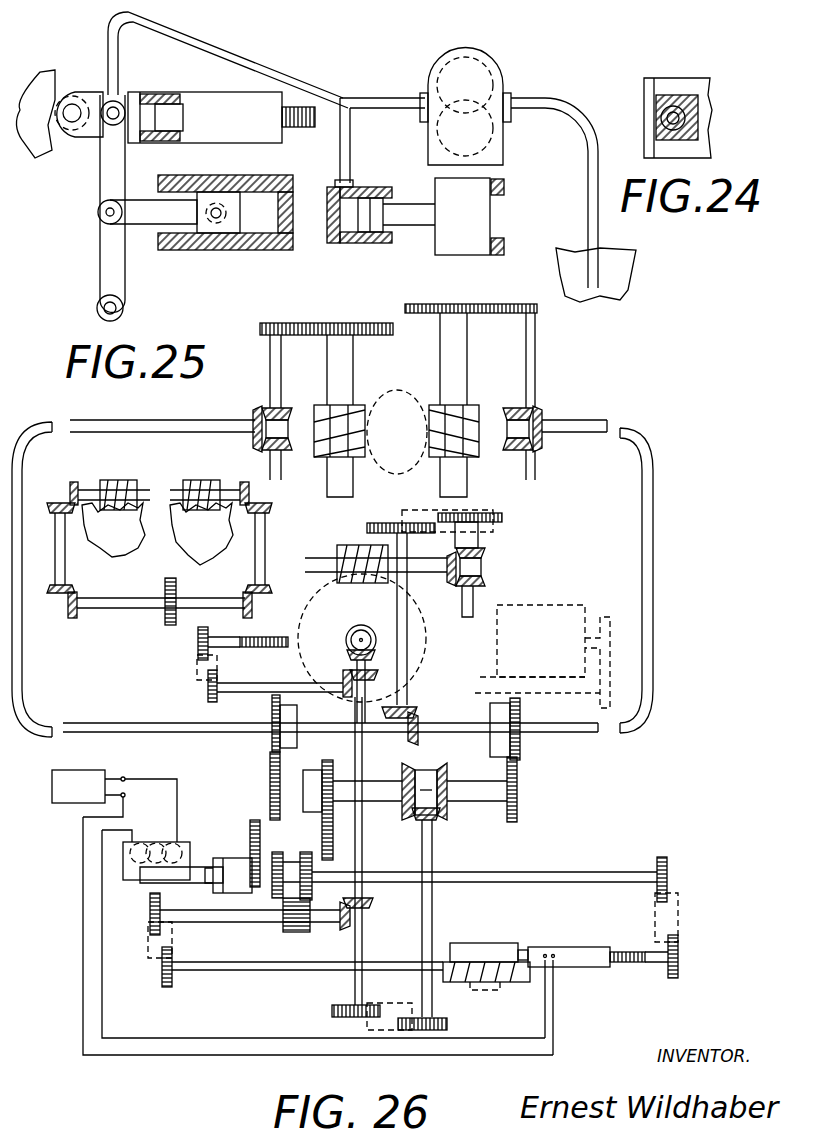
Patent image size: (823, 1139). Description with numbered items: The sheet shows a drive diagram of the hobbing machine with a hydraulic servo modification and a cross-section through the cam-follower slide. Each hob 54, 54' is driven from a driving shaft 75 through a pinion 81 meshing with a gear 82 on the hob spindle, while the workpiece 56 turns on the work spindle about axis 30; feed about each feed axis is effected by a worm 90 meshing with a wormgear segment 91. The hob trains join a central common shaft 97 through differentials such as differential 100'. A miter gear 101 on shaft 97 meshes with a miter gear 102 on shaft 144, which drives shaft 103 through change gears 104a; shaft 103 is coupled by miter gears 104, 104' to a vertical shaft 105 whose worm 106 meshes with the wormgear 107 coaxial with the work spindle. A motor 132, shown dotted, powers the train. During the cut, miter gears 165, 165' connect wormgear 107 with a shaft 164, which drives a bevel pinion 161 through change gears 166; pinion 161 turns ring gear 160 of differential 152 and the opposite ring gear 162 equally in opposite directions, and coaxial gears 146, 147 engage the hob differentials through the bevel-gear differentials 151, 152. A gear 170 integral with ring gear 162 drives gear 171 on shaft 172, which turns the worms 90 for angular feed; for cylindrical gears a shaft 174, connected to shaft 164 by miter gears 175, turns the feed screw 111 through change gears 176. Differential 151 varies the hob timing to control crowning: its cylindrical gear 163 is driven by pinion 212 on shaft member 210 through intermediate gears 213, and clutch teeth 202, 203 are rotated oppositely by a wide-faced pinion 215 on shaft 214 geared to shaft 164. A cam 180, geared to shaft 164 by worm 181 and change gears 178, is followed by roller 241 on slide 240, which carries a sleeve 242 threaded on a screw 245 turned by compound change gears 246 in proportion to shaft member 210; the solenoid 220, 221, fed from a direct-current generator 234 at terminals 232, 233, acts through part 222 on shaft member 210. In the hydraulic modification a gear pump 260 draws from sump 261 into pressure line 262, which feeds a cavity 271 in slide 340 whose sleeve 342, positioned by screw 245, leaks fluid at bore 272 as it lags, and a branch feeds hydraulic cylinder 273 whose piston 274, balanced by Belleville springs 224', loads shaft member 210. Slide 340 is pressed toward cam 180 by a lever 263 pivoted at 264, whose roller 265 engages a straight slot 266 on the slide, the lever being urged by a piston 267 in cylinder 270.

In FIG. 25, the lever 263 is at (110, 190).
In FIG. 25, the pivot 264 is at (100, 303).
In FIG. 25, the pin 266 is at (120, 102).
In FIG. 25, the nut housing 180 is at (72, 92).
In FIG. 26, the nut housing 180 is at (460, 946).
In FIG. 25, the workpiece 241 is at (64, 134).
In FIG. 25, the pipe bend 265 is at (106, 80).
In FIG. 25, the pipe 262 is at (377, 103).
In FIG. 25, the pump 260 is at (490, 72).
In FIG. 25, the reservoir 261 is at (608, 268).
In FIG. 25, the inlet fitting 273 is at (368, 177).
In FIG. 25, the hydraulic cylinder 274 is at (380, 236).
In FIG. 25, the shaft 210 is at (495, 210).
In FIG. 26, the shaft 210 is at (495, 881).
In FIG. 25, the bearing 224' is at (520, 204).
In FIG. 25, the cylinder 271 is at (203, 97).
In FIG. 25, the liner 340 is at (210, 96).
In FIG. 25, the end cap 272 is at (137, 140).
In FIG. 25, the piston 342 is at (176, 131).
In FIG. 25, the threaded spindle 245 is at (295, 127).
In FIG. 24, the threaded spindle 245 is at (692, 122).
In FIG. 26, the threaded spindle 245 is at (629, 952).
In FIG. 25, the cylinder 270 is at (168, 250).
In FIG. 25, the piston 267 is at (240, 228).
In FIG. 24, the nut 240 is at (690, 95).
In FIG. 26, the nut 240 is at (545, 950).
In FIG. 24, the bushing 242 is at (697, 108).
In FIG. 26, the shaft 75 is at (148, 426).
In FIG. 26, the gear 81 is at (283, 334).
In FIG. 26, the gear 82 is at (375, 334).
In FIG. 26, the hob 54 is at (332, 417).
In FIG. 26, the hob 54' is at (460, 417).
In FIG. 26, the workpiece 56 is at (372, 399).
In FIG. 26, the work gear 30 is at (394, 436).
In FIG. 26, the worm 90 is at (120, 486).
In FIG. 26, the workpiece 91 is at (125, 532).
In FIG. 26, the shaft 172 is at (100, 603).
In FIG. 26, the gear 171 is at (165, 625).
In FIG. 26, the feed screw 111 is at (250, 640).
In FIG. 26, the change gears 176 is at (208, 676).
In FIG. 26, the shaft 174 is at (235, 687).
In FIG. 26, the worm 106 is at (337, 552).
In FIG. 26, the shaft 105 is at (405, 566).
In FIG. 26, the shaft 144 is at (407, 681).
In FIG. 26, the gear 104a is at (492, 518).
In FIG. 26, the bevel gear 104' is at (496, 540).
In FIG. 26, the bevel gear 104 is at (489, 568).
In FIG. 26, the shaft 103 is at (462, 603).
In FIG. 26, the worm wheel 107 is at (425, 633).
In FIG. 26, the control box 132 is at (570, 606).
In FIG. 26, the gear 165 is at (352, 631).
In FIG. 26, the bevel gear 165' is at (344, 680).
In FIG. 26, the bevel gear 175 is at (344, 679).
In FIG. 26, the bevel gear 102 is at (408, 709).
In FIG. 26, the bevel gear 101 is at (419, 729).
In FIG. 26, the shaft 97 is at (345, 729).
In FIG. 26, the gear 100' is at (266, 722).
In FIG. 26, the gear 146 is at (270, 779).
In FIG. 26, the gear 163 is at (323, 775).
In FIG. 26, the hub 151 is at (310, 800).
In FIG. 26, the clutch member 170 is at (405, 776).
In FIG. 26, the clutch 162 is at (422, 770).
In FIG. 26, the clutch member 160 is at (441, 766).
In FIG. 26, the shaft 152 is at (432, 798).
In FIG. 26, the bevel gear 161 is at (430, 823).
In FIG. 26, the gear 147 is at (517, 791).
In FIG. 26, the shaft 164 is at (362, 859).
In FIG. 26, the gears 166 is at (358, 1008).
In FIG. 26, the gear 213 is at (252, 829).
In FIG. 26, the clutch 212 is at (235, 863).
In FIG. 26, the solenoid 221 is at (182, 846).
In FIG. 26, the coil 220 is at (150, 843).
In FIG. 26, the plunger 222 is at (160, 881).
In FIG. 26, the control unit 234 is at (72, 776).
In FIG. 26, the contact 232 is at (149, 799).
In FIG. 26, the contact 233 is at (120, 815).
In FIG. 26, the gear 202 is at (272, 881).
In FIG. 26, the gear 203 is at (298, 881).
In FIG. 26, the gear 215 is at (305, 931).
In FIG. 26, the shaft 214 is at (218, 923).
In FIG. 26, the change gears 178 is at (162, 962).
In FIG. 26, the gears 246 is at (667, 890).
In FIG. 26, the worm 181 is at (500, 985).